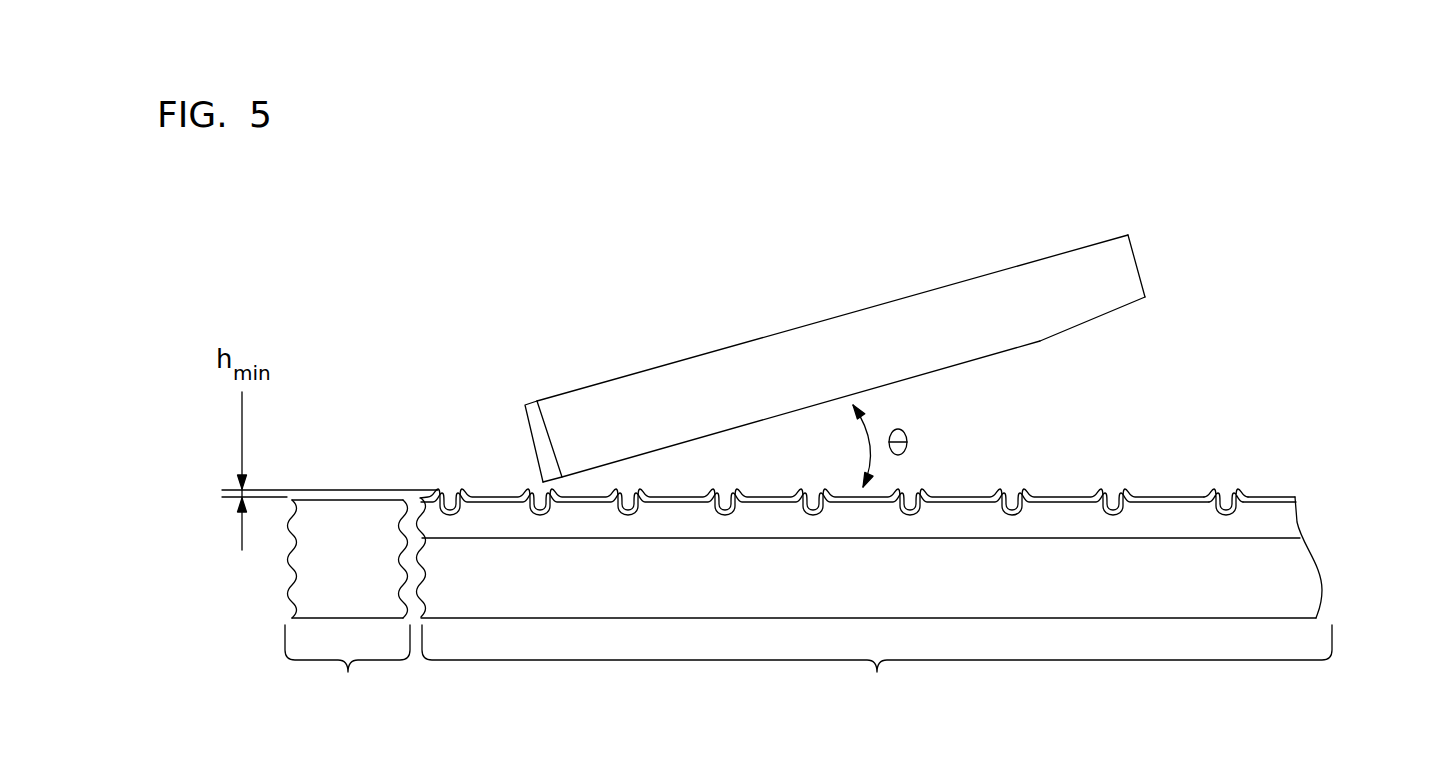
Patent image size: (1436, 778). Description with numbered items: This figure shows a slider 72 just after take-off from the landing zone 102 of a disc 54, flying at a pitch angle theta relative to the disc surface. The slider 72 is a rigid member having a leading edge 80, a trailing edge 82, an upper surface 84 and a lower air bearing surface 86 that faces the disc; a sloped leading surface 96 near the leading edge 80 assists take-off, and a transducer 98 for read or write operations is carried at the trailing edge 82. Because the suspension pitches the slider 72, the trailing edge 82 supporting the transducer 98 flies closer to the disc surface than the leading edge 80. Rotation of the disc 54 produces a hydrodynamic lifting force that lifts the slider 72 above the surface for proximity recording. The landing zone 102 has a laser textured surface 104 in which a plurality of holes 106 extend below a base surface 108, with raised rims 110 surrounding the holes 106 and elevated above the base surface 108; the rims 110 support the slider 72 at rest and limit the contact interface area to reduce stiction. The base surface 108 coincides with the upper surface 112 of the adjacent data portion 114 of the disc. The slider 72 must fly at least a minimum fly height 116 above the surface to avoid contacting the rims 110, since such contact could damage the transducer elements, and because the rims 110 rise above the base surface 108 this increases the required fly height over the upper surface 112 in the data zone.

The disc 54 is at (922, 473).
The slider 72 is at (786, 331).
The leading edge 80 is at (1132, 247).
The trailing edge 82 is at (525, 418).
The upper surface 84 is at (680, 360).
The lower air bearing surface 86 is at (928, 373).
The sloped leading surface 96 is at (1097, 318).
The transducer 98 is at (533, 402).
The landing zone 102 is at (875, 604).
The laser textured surface 104 is at (1178, 497).
The holes 106 is at (1227, 496).
The base surface 108 is at (488, 497).
The raised rims 110 is at (1238, 492).
The upper surface 112 is at (367, 495).
The data portion 114 is at (347, 605).
The minimum fly height 116 is at (242, 438).